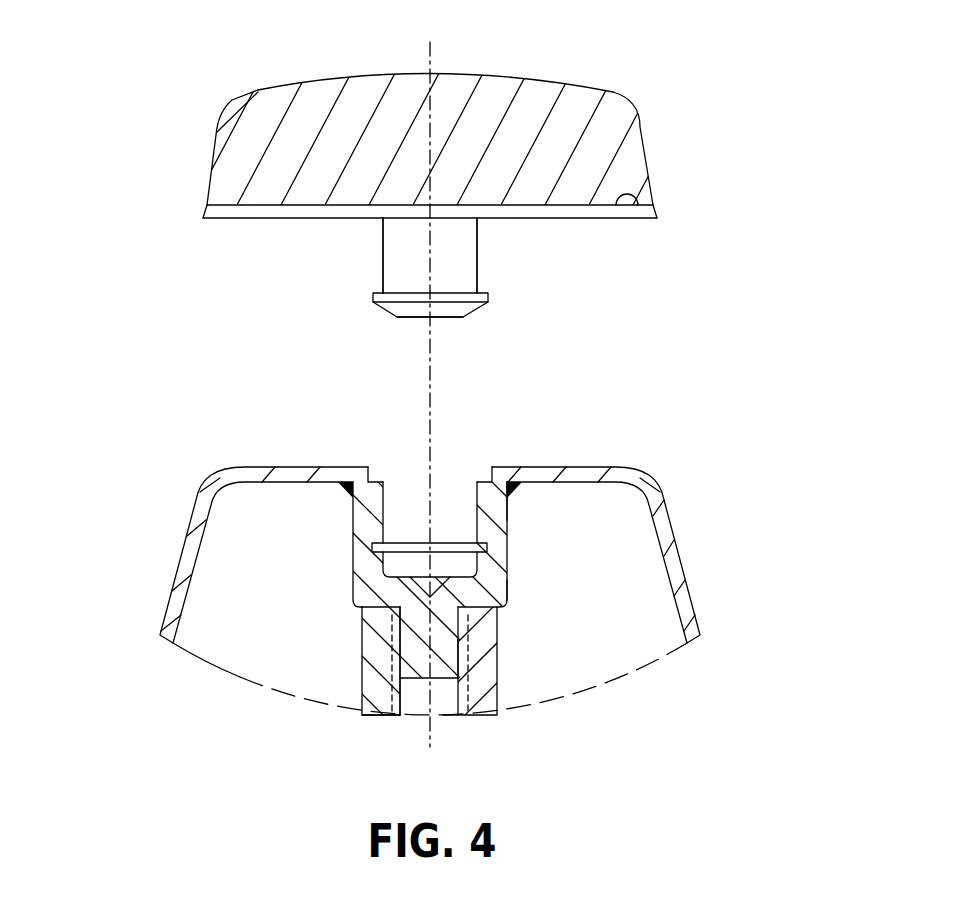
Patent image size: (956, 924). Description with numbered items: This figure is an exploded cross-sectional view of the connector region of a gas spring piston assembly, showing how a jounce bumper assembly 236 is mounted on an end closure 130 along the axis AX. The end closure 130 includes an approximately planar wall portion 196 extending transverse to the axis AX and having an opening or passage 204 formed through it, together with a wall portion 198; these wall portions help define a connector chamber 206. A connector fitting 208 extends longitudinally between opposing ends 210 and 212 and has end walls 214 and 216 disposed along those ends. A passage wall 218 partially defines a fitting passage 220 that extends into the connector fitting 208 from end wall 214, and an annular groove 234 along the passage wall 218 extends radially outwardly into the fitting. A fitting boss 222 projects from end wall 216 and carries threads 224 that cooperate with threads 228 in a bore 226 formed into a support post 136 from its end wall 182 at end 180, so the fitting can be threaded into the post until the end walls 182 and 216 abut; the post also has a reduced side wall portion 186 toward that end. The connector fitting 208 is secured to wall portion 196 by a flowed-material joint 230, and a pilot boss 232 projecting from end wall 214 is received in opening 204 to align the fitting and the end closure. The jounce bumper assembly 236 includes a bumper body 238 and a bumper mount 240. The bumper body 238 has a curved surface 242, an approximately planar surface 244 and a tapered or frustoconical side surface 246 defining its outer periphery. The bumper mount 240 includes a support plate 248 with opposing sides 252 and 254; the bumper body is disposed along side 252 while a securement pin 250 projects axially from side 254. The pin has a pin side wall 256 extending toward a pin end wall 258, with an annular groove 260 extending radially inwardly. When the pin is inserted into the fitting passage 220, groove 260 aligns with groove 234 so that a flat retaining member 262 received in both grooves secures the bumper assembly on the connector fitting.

The axis AX is at (436, 388).
The end closure 130 is at (702, 572).
The support post 136 is at (375, 707).
The end 180 is at (355, 680).
The end wall 182 is at (362, 640).
The side wall portion 186 is at (495, 686).
The wall portion 196 is at (572, 476).
The wall portion 198 is at (184, 546).
The opening or passage 204 is at (345, 478).
The connector chamber 206 is at (242, 637).
The connector fitting 208 is at (350, 595).
The end 210 is at (522, 508).
The end 212 is at (523, 606).
The end wall 214 is at (506, 497).
The end wall 216 is at (498, 590).
The passage wall 218 is at (396, 478).
The fitting passage 220 is at (458, 490).
The fitting boss 222 is at (448, 645).
The threads 224 is at (462, 660).
The opening or bore 226 is at (417, 697).
The threads 228 is at (455, 700).
The flowed-material joint 230 is at (346, 498).
The pilot boss 232 is at (370, 470).
The annular groove 234 is at (372, 546).
The jounce bumper assembly 236 is at (650, 119).
The bumper body 238 is at (548, 97).
The bumper mount 240 is at (372, 236).
The surface 242 is at (321, 86).
The surface 244 is at (640, 192).
The side surface 246 is at (654, 168).
The support plate 248 is at (250, 212).
The securement pin 250 is at (475, 258).
The side 252 is at (213, 210).
The side 254 is at (311, 212).
The pin side wall 256 is at (478, 268).
The pin end wall 258 is at (410, 306).
The annular groove 260 is at (447, 305).
The retaining member 262 is at (489, 298).